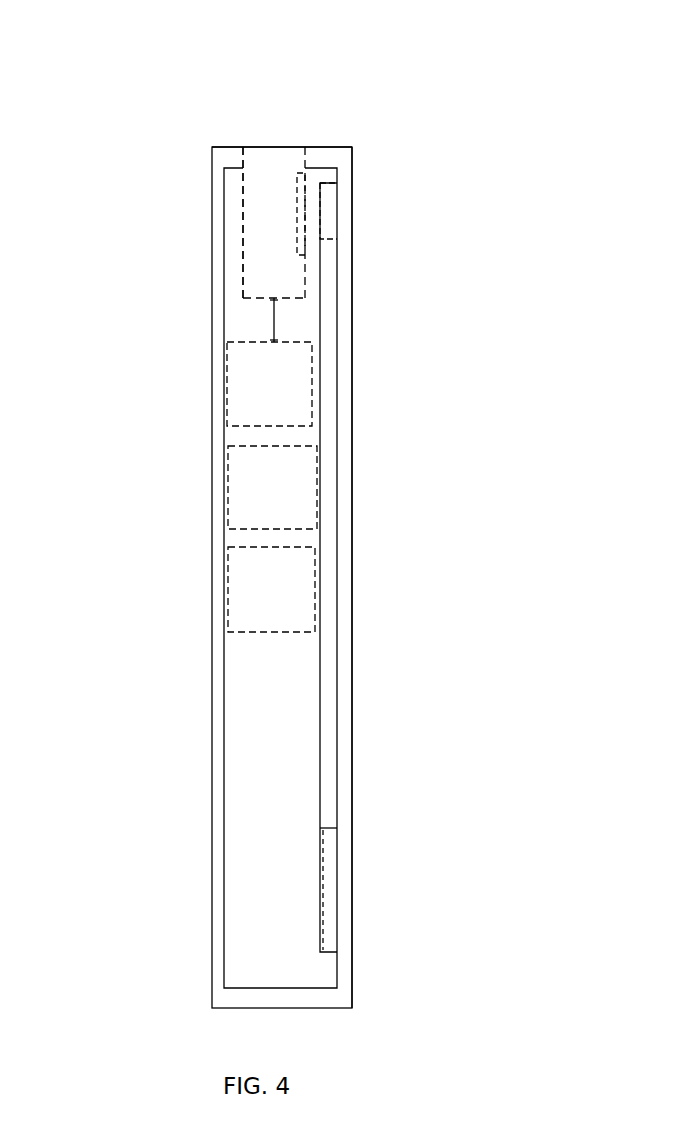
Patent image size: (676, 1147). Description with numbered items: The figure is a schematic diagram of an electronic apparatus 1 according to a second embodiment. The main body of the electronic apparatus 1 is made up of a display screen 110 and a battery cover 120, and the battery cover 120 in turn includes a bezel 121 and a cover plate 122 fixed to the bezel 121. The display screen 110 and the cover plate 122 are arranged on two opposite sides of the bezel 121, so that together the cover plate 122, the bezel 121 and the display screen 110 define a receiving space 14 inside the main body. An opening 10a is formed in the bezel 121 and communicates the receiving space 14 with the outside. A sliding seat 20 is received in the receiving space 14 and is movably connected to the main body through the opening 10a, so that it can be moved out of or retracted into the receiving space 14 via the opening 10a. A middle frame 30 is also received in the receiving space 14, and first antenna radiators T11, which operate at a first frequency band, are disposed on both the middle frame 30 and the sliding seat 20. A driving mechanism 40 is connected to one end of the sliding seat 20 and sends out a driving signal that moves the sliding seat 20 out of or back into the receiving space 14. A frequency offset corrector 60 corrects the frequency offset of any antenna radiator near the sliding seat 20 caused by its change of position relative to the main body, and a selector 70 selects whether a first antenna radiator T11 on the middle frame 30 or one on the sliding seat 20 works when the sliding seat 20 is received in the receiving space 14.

The electronic apparatus 1 is at (283, 31).
The opening 10a is at (285, 143).
The display screen 110 is at (343, 323).
The battery cover 120 is at (138, 124).
The bezel 121 is at (230, 154).
The cover plate 122 is at (220, 186).
The receiving space 14 is at (243, 262).
The sliding seat 20 is at (255, 153).
The middle frame 30 is at (328, 383).
The first antenna radiator T11 is at (328, 230).
The driving mechanism 40 is at (257, 362).
The frequency offset corrector 60 is at (260, 457).
The selector 70 is at (257, 575).